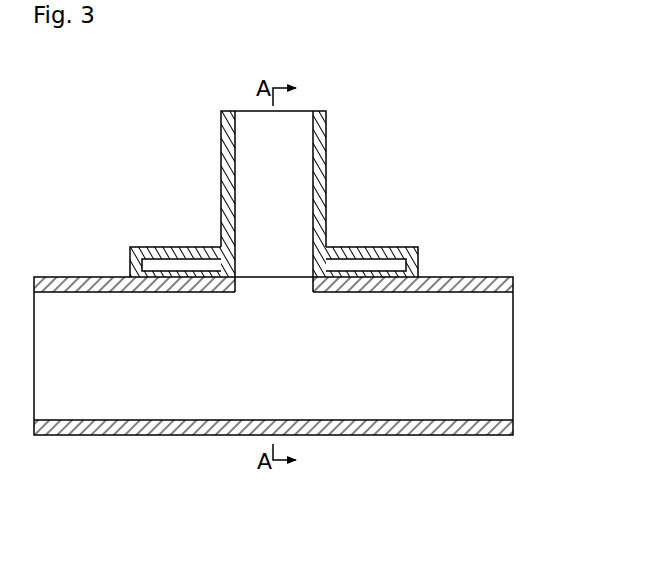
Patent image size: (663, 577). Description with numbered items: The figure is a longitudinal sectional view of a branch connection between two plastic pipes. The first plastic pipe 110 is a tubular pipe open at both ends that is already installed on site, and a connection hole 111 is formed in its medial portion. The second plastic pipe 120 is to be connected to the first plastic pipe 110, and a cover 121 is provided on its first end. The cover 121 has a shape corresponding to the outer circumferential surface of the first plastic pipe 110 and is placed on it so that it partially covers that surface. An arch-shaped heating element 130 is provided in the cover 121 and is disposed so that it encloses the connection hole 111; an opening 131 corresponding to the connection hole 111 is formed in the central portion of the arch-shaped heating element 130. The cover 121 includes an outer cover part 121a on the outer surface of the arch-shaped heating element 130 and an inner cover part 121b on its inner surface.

The first plastic pipe 110 is at (145, 428).
The connection hole 111 is at (273, 287).
The second plastic pipe 120 is at (327, 170).
The cover 121 is at (436, 239).
The outer cover part 121a is at (376, 248).
The inner cover part 121b is at (380, 263).
The arch-shaped heating element 130 is at (170, 262).
The opening 131 is at (273, 261).